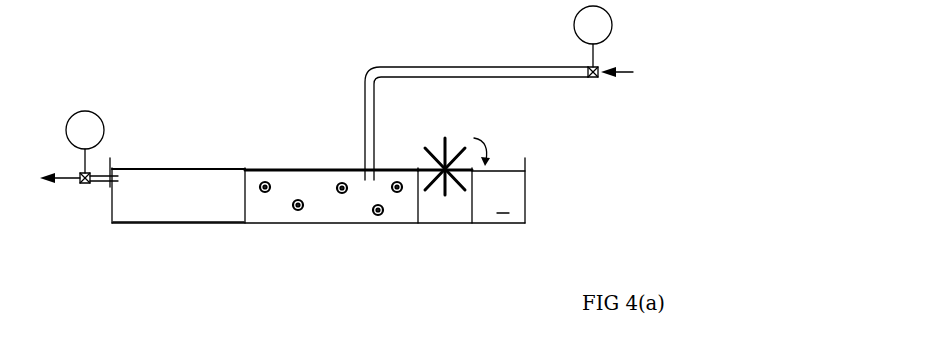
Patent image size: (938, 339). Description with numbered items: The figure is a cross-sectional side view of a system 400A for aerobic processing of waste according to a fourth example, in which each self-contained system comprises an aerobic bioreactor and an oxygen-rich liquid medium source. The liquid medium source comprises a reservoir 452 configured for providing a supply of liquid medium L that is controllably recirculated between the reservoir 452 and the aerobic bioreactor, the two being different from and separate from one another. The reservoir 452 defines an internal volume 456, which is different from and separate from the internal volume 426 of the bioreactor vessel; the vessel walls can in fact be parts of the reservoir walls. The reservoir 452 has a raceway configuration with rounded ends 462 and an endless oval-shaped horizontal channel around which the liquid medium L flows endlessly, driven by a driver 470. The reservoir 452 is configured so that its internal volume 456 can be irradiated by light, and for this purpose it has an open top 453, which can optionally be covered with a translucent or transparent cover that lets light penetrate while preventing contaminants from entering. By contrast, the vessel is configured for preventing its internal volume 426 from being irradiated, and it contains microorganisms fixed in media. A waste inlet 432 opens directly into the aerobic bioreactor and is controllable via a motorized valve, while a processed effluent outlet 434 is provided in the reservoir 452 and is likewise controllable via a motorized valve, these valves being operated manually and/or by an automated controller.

The system for aerobic processing of waste 400A is at (262, 105).
The processed effluent outlet 434 is at (98, 173).
The open top 453 is at (184, 168).
The driver 470 is at (445, 138).
The waste inlet 432 is at (567, 78).
The rounded ends 462 is at (110, 204).
The reservoir 452 is at (143, 223).
The internal volume 456 is at (217, 203).
The internal volume 426 is at (333, 203).